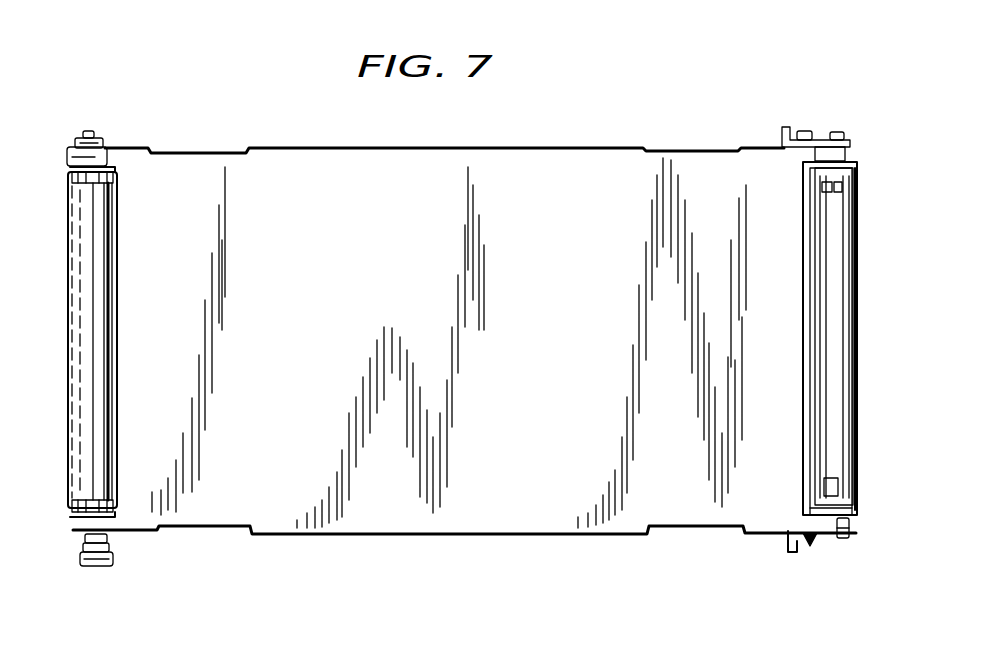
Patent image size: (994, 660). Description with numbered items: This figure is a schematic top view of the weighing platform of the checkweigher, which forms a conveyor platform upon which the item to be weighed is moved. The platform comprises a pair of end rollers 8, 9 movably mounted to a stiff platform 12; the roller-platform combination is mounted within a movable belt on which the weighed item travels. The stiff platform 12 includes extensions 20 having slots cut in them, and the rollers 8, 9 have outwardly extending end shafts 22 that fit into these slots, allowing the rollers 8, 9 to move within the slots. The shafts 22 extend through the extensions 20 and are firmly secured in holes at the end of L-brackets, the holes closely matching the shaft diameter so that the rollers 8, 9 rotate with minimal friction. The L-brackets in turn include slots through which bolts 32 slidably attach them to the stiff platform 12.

The end roller 8 is at (64, 372).
The end roller 9 is at (866, 373).
The stiff platform 12 is at (496, 538).
The extension 20 is at (62, 148).
The end shaft 22 is at (845, 148).
The bolt 32 is at (807, 552).